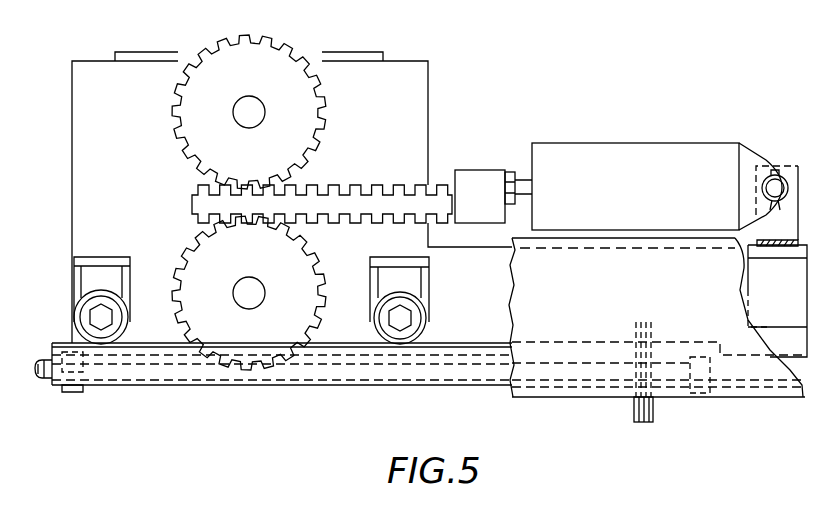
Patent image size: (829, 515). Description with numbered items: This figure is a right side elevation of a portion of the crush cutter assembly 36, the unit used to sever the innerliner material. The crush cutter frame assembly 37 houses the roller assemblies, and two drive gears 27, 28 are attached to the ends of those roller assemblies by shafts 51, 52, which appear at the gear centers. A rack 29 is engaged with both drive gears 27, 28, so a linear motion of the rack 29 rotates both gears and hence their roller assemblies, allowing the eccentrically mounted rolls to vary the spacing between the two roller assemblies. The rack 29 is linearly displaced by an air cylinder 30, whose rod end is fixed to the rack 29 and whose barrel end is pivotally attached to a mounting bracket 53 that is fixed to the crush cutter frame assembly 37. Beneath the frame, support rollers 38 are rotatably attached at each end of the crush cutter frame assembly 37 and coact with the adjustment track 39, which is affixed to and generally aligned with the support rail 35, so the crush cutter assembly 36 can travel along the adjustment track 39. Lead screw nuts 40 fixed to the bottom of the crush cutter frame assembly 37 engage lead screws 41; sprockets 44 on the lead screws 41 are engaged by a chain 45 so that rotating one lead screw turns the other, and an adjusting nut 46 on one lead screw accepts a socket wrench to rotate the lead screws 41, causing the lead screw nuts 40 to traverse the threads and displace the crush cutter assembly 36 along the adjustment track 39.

The drive gear 27 is at (275, 56).
The drive gear 28 is at (208, 252).
The rack 29 is at (412, 196).
The air cylinder 30 is at (641, 163).
The support rail 35 is at (762, 380).
The crush cutter assembly 36 is at (424, 54).
The crush cutter frame assembly 37 is at (100, 60).
The support roller 38 is at (96, 298).
The adjustment track 39 is at (321, 384).
The lead screw nut 40 is at (73, 393).
The lead screw 41 is at (44, 380).
The sprocket 44 is at (636, 405).
The chain 45 is at (652, 420).
The adjusting nut 46 is at (701, 395).
The shaft 51 is at (254, 125).
The shaft 52 is at (258, 302).
The mounting bracket 53 is at (766, 278).